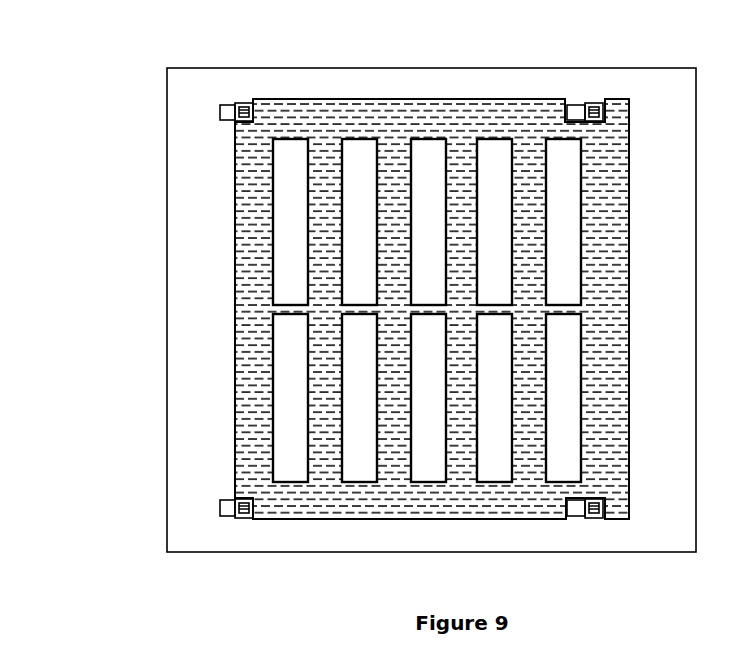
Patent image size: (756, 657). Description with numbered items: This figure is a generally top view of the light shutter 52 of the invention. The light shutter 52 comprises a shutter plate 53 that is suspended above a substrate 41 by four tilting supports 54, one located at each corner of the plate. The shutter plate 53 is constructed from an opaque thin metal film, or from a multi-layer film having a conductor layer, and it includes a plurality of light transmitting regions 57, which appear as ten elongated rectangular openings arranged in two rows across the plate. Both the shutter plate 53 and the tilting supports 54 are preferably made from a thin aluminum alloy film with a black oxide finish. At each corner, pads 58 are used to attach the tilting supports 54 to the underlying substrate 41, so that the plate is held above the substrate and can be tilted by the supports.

The substrate 41 is at (684, 385).
The light shutter 52 is at (138, 111).
The shutter plate 53 is at (309, 117).
The tilting supports 54 is at (243, 107).
The light transmitting regions 57 is at (362, 190).
The pads 58 is at (228, 111).